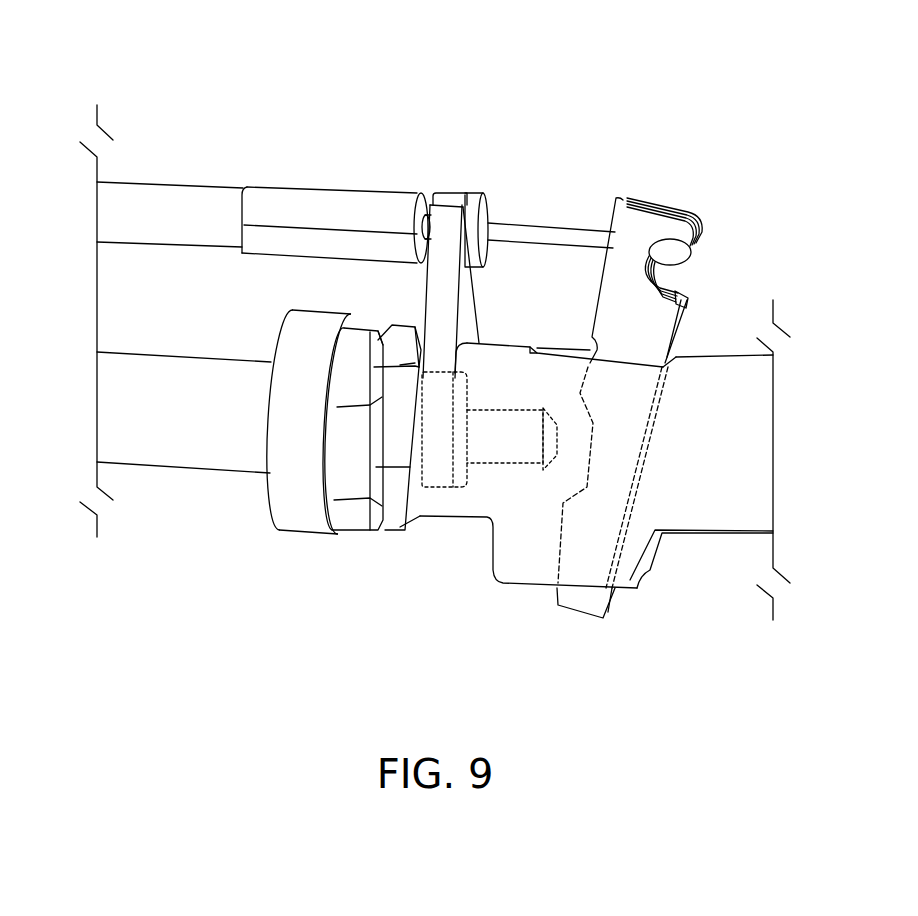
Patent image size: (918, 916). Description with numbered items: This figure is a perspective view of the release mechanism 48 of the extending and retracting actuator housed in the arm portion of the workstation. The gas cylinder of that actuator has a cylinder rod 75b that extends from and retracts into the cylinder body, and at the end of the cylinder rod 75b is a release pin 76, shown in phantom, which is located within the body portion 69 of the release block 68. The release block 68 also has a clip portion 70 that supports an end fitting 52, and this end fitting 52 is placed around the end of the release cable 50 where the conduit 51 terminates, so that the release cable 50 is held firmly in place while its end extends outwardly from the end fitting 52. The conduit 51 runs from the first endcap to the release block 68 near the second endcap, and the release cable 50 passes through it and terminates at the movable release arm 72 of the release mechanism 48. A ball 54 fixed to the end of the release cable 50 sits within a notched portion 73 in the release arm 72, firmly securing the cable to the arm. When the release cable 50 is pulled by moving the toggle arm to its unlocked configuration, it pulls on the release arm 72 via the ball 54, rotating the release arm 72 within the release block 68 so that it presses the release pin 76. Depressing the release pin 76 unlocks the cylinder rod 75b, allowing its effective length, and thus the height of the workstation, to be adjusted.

The release mechanism 48 is at (697, 116).
The release cable 50 is at (567, 233).
The conduit 51 is at (173, 197).
The end fitting 52 is at (318, 208).
The ball 54 is at (682, 250).
The release block 68 is at (630, 590).
The body portion 69 is at (730, 518).
The clip portion 70 is at (467, 310).
The release arm 72 is at (627, 212).
The notched portion 73 is at (685, 295).
The cylinder rod 75b is at (192, 452).
The release pin 76 is at (530, 432).